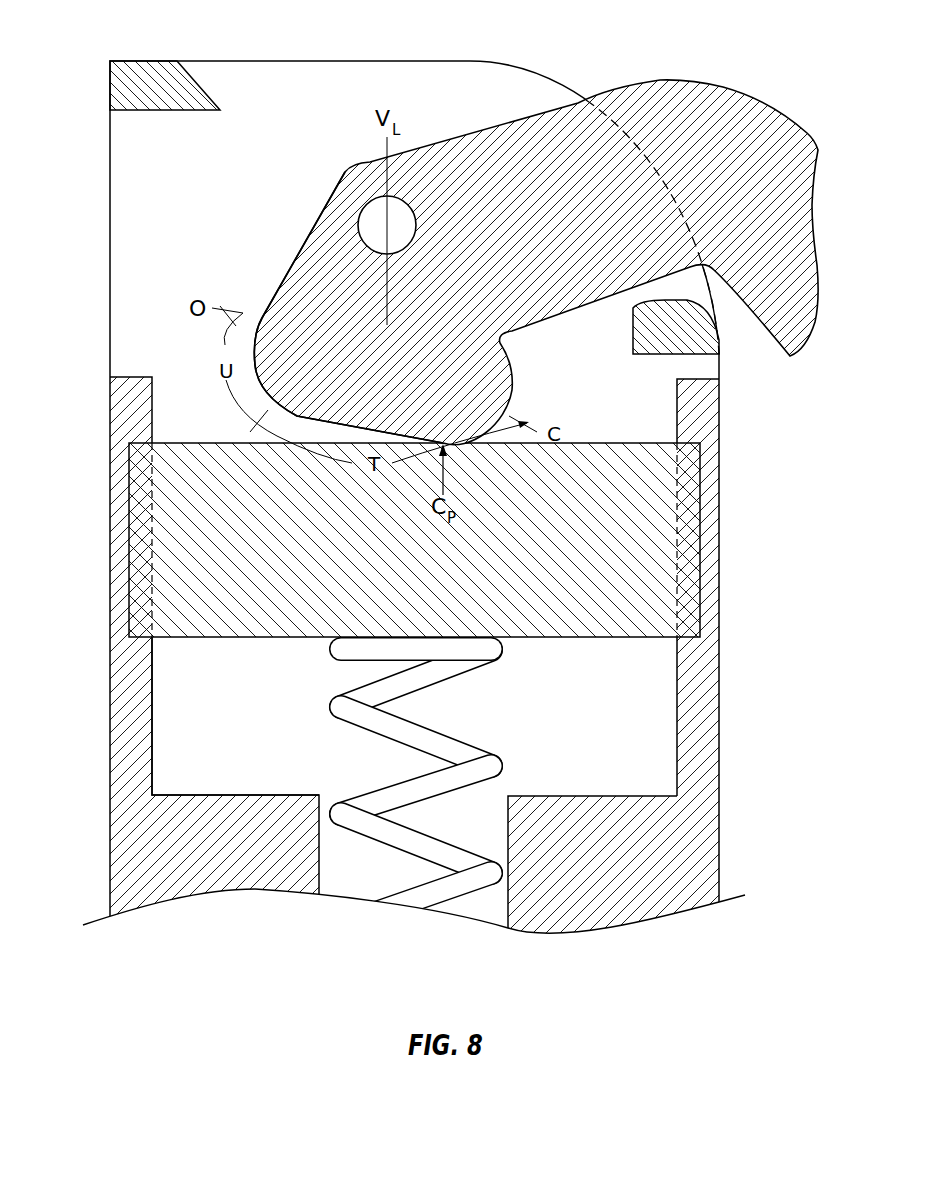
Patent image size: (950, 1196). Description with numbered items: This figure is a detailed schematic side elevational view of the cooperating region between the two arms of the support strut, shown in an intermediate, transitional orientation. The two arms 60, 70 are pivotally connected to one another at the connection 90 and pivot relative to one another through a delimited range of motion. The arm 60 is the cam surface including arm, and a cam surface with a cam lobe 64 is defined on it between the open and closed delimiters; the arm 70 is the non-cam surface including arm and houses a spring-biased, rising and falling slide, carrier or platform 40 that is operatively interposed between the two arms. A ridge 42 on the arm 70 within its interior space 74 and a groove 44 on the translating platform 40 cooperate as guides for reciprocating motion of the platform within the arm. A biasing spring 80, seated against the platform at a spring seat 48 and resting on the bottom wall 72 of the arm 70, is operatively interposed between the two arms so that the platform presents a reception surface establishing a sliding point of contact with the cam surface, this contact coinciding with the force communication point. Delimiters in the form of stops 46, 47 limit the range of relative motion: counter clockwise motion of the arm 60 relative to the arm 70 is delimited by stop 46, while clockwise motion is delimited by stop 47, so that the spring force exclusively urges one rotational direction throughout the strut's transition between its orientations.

The platform 40 is at (170, 557).
The ridge 42 is at (140, 413).
The groove 44 is at (108, 460).
The stop 46 is at (110, 61).
The stop 47 is at (717, 340).
The spring seat 48 is at (356, 632).
The arm 60 is at (696, 52).
The cam lobe 64 is at (260, 271).
The arm 70 is at (733, 858).
The bottom wall 72 is at (480, 917).
The interior space 74 is at (170, 683).
The biasing spring 80 is at (478, 652).
The connection 90 is at (373, 220).